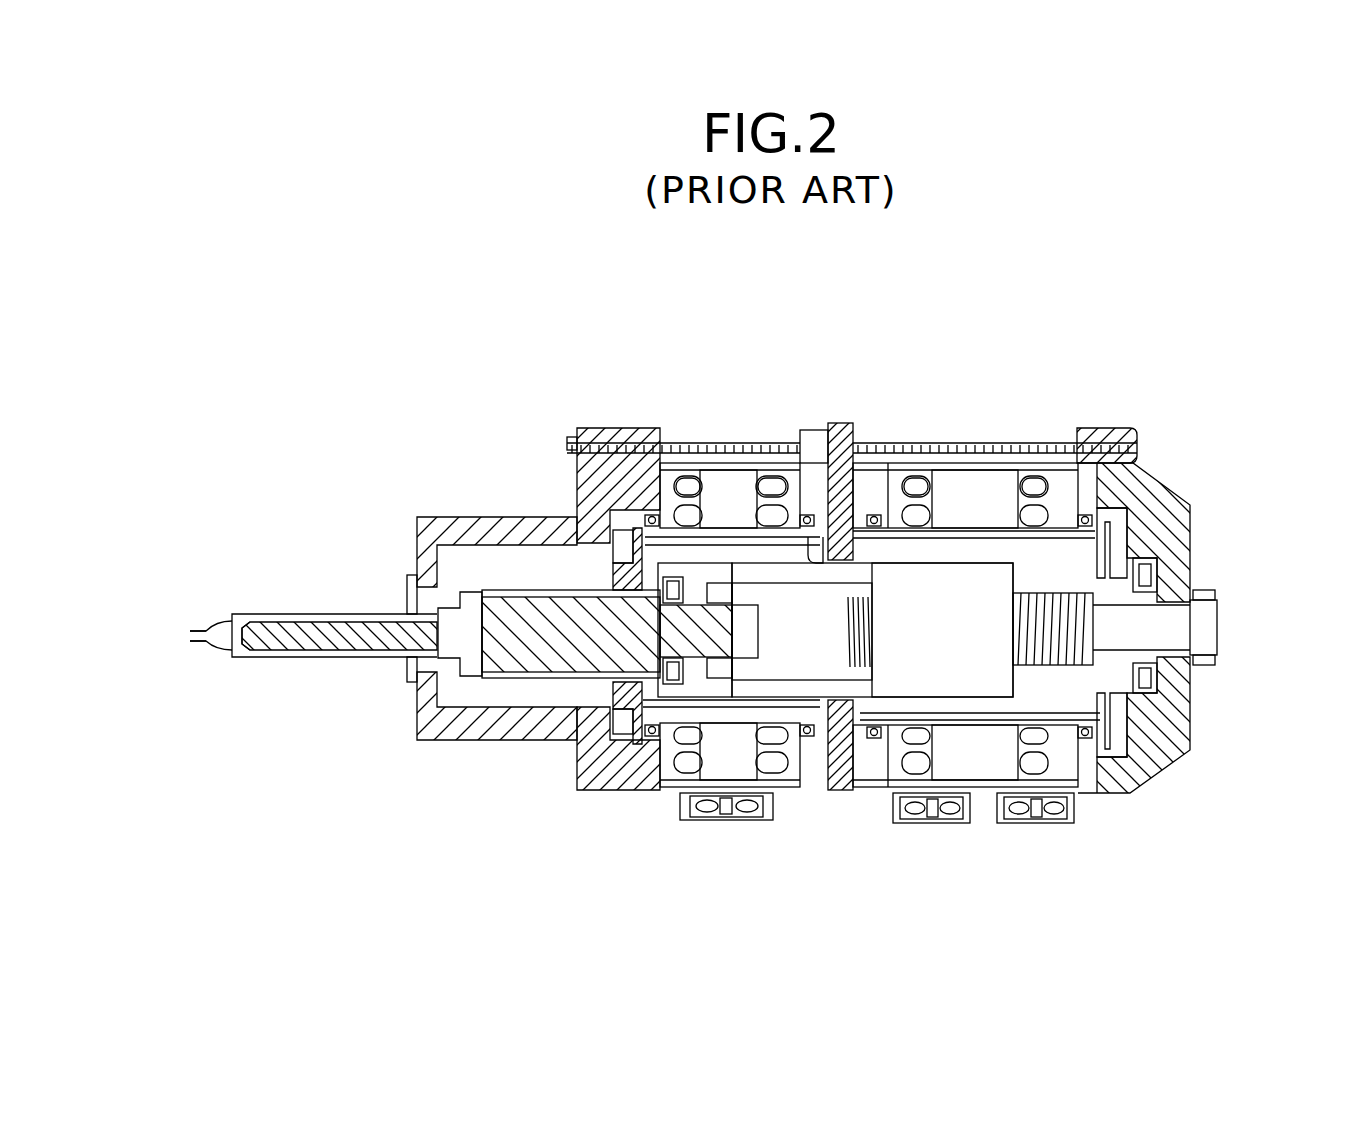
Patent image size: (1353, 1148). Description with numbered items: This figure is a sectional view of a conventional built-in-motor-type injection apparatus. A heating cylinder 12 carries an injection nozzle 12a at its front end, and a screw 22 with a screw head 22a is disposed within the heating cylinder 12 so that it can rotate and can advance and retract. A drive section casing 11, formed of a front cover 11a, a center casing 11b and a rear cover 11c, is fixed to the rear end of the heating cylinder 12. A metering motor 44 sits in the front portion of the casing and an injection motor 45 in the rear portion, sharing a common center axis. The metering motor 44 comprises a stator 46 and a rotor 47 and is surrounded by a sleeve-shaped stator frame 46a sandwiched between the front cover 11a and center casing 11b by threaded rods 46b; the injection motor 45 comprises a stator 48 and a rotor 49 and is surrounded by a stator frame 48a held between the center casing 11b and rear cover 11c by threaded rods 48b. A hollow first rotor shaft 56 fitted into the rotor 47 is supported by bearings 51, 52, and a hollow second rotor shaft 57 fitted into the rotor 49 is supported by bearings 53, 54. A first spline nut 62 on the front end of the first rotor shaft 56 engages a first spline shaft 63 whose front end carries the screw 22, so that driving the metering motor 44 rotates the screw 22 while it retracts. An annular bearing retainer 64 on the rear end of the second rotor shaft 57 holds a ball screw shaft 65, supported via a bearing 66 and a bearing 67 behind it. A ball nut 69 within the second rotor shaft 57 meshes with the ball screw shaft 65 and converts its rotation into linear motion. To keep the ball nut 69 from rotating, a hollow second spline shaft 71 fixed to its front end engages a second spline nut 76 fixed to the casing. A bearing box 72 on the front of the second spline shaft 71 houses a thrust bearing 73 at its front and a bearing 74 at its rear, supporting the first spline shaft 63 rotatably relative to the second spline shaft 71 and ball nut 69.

The drive section casing 11 is at (840, 430).
The front cover 11a is at (577, 430).
The center casing 11b is at (890, 462).
The rear cover 11c is at (1125, 430).
The heating cylinder 12 is at (237, 614).
The injection nozzle 12a is at (200, 632).
The screw 22 is at (314, 636).
The screw head 22a is at (247, 652).
The metering motor 44 is at (695, 452).
The injection motor 45 is at (1030, 446).
The stator 46 is at (722, 478).
The stator frame 46a is at (768, 500).
The threaded rods 46b is at (668, 470).
The rotor 47 is at (728, 512).
The stator 48 is at (990, 488).
The stator frame 48a is at (965, 498).
The threaded rods 48b is at (1040, 478).
The rotor 49 is at (950, 468).
The bearing 51 is at (640, 445).
The bearing 52 is at (800, 500).
The bearing 53 is at (878, 535).
The bearing 54 is at (1152, 476).
The first rotor shaft 56 is at (812, 545).
The second rotor shaft 57 is at (1062, 470).
The first spline nut 62 is at (598, 552).
The first spline shaft 63 is at (515, 600).
The bearing retainer 64 is at (1150, 757).
The ball screw shaft 65 is at (1058, 665).
The bearing 66 is at (1165, 548).
The bearing 67 is at (1180, 575).
The ball nut 69 is at (968, 680).
The second spline shaft 71 is at (820, 693).
The bearing box 72 is at (712, 668).
The thrust bearing 73 is at (562, 765).
The bearing 74 is at (657, 672).
The second spline nut 76 is at (846, 555).